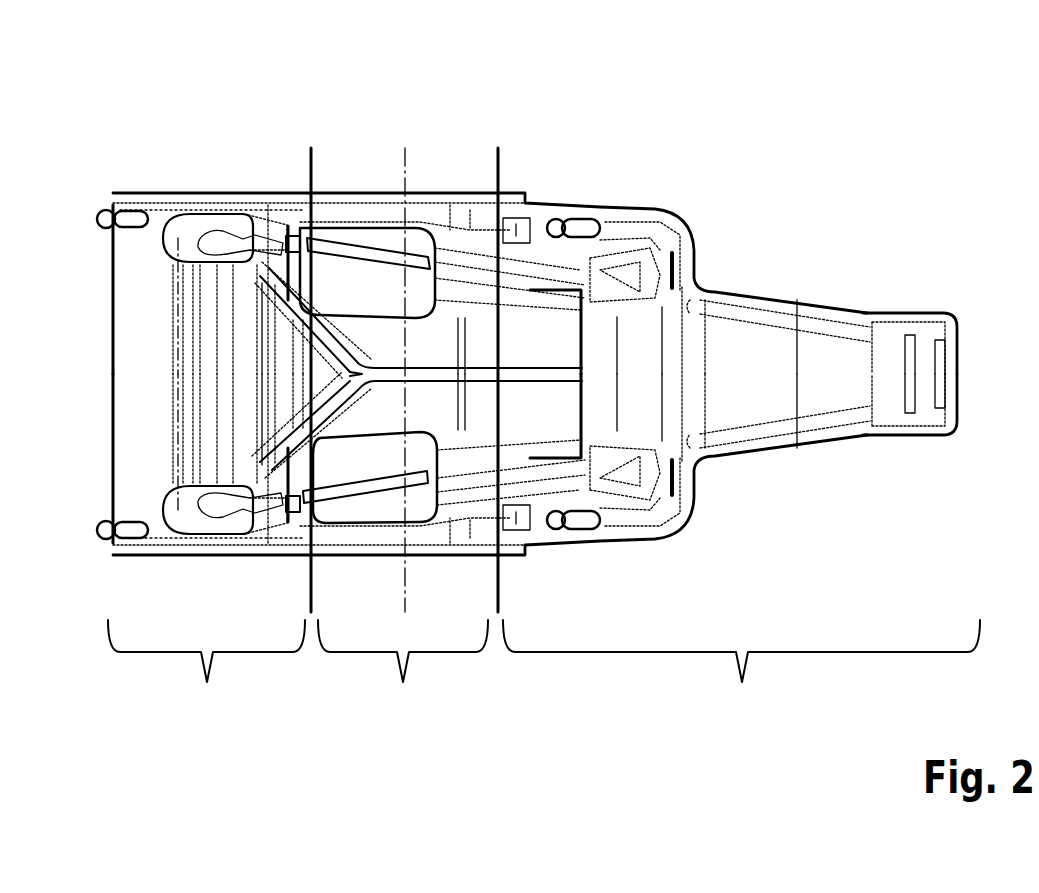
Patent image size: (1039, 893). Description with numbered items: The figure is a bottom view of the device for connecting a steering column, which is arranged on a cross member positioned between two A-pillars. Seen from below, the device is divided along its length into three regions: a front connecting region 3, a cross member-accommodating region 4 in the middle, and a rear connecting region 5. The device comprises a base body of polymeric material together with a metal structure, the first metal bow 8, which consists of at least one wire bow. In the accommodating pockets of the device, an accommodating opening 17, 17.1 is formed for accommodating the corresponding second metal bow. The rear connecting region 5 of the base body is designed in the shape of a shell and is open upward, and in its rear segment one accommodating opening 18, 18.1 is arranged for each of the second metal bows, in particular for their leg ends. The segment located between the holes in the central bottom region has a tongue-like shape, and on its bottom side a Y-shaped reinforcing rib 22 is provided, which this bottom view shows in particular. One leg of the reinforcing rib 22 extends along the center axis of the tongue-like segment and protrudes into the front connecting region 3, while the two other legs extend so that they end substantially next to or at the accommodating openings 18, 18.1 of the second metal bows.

The front connecting region 3 is at (741, 674).
The cross member-accommodating region 4 is at (403, 674).
The rear connecting region 5 is at (206, 674).
The first metal bow 8 is at (363, 252).
The accommodating opening 17 is at (604, 523).
The accommodating opening 17.1 is at (601, 214).
The accommodating opening 18 is at (137, 522).
The accommodating opening 18.1 is at (136, 197).
The reinforcing rib 22 is at (376, 370).